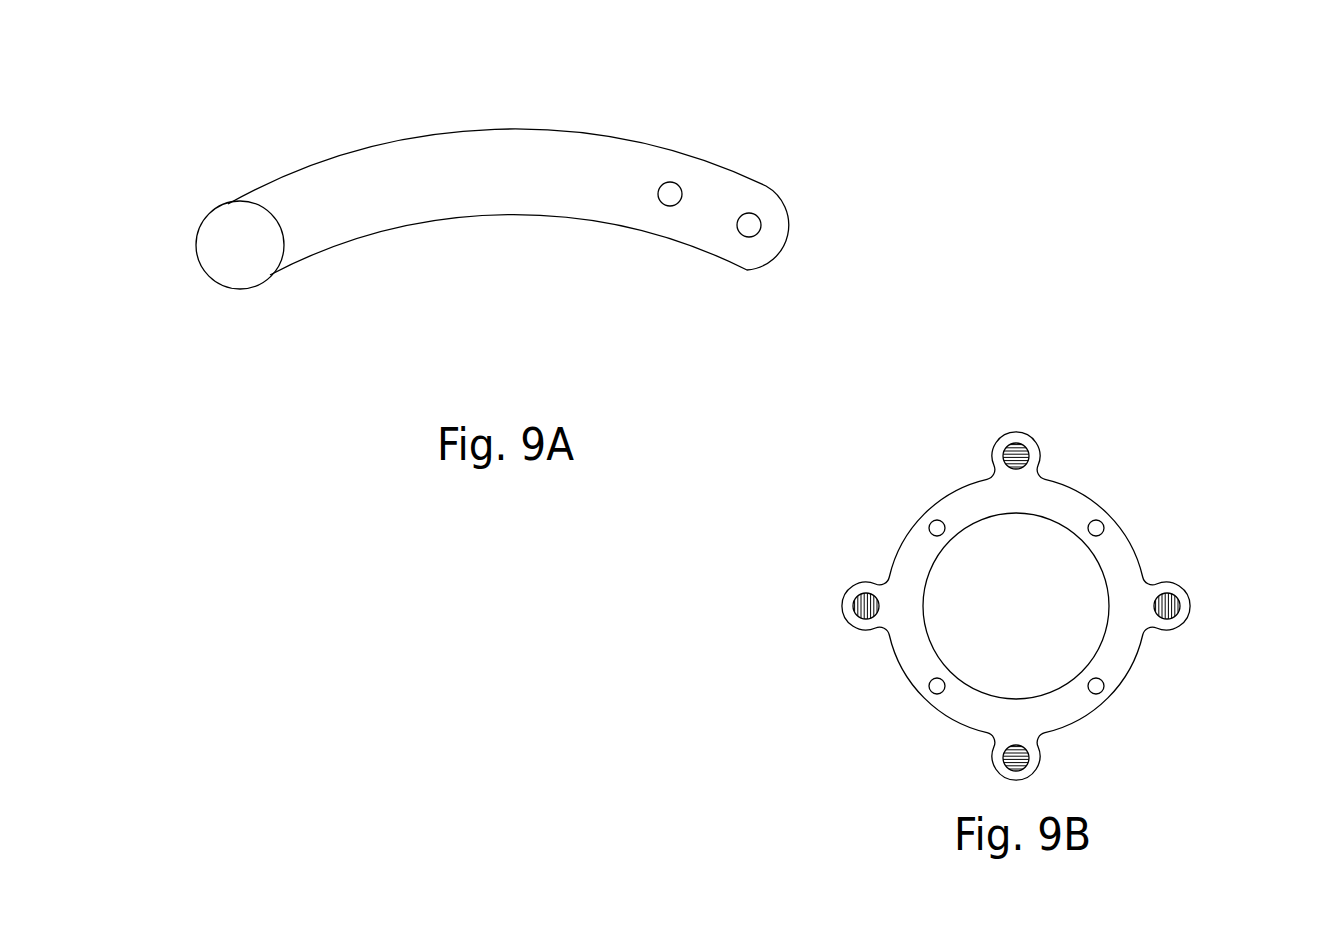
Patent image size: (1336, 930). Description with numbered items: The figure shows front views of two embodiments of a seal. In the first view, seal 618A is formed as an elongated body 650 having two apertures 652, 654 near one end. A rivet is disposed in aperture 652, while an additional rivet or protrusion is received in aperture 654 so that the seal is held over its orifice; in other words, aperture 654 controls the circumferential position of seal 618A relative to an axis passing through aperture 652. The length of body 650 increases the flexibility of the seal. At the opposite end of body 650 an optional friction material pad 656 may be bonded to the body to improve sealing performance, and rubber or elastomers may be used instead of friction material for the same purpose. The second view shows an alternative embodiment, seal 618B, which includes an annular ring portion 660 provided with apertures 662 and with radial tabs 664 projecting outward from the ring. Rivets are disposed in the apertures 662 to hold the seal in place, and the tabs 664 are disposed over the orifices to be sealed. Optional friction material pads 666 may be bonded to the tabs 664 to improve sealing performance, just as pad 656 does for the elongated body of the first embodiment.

In FIG. 9A, the seal 618A is at (648, 69).
In FIG. 9A, the elongated body 650 is at (493, 185).
In FIG. 9A, the aperture 652 is at (748, 230).
In FIG. 9A, the aperture 654 is at (670, 188).
In FIG. 9A, the friction material pad 656 is at (243, 260).
In FIG. 9B, the seal 618B is at (1070, 433).
In FIG. 9B, the annular ring portion 660 is at (1072, 503).
In FIG. 9B, the apertures 662 is at (1097, 530).
In FIG. 9B, the radial tabs 664 is at (1138, 605).
In FIG. 9B, the friction material pads 666 is at (1170, 608).